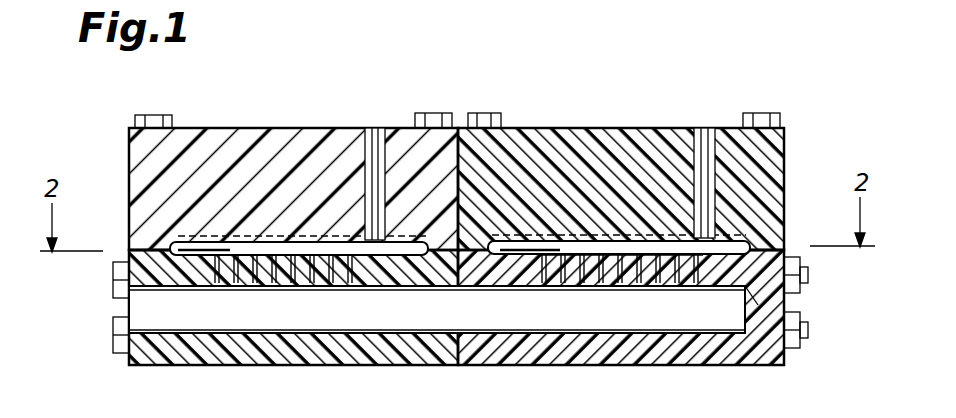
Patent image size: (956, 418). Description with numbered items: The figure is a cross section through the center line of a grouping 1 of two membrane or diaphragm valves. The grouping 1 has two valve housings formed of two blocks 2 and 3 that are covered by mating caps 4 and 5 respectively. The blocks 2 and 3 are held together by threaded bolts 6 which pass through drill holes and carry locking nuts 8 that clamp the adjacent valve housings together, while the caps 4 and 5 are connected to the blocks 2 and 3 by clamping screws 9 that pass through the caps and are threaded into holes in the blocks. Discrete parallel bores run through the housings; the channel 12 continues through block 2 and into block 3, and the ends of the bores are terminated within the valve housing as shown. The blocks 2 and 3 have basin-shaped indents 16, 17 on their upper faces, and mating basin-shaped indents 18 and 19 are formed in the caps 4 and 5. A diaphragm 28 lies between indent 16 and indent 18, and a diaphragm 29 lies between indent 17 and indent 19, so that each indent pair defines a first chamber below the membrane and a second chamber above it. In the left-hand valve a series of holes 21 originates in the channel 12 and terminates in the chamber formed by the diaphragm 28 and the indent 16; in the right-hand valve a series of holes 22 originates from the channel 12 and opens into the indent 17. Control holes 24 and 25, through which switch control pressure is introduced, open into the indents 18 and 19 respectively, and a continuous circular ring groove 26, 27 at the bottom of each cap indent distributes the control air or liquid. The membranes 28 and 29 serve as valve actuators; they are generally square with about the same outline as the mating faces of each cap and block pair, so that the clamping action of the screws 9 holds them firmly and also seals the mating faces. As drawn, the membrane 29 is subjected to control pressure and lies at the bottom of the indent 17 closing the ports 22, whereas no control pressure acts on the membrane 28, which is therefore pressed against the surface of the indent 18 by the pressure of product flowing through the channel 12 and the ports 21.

The grouping 1 is at (461, 372).
The block 2 is at (346, 366).
The block 3 is at (643, 357).
The cap 4 is at (251, 150).
The cap 5 is at (530, 140).
The threaded bolts 6 is at (113, 290).
The locking nuts 8 is at (802, 260).
The clamping screws 9 is at (136, 117).
The channel 12 is at (295, 325).
The basin-shaped indent 16 is at (172, 252).
The basin-shaped indent 17 is at (735, 253).
The basin-shaped indent 18 is at (316, 244).
The basin-shaped indent 19 is at (632, 240).
The holes 21 is at (287, 283).
The holes 22 is at (552, 270).
The control hole 24 is at (378, 134).
The control hole 25 is at (704, 134).
The ring groove 26 is at (206, 236).
The ring groove 27 is at (524, 238).
The diaphragm 28 is at (175, 251).
The diaphragm 29 is at (718, 252).